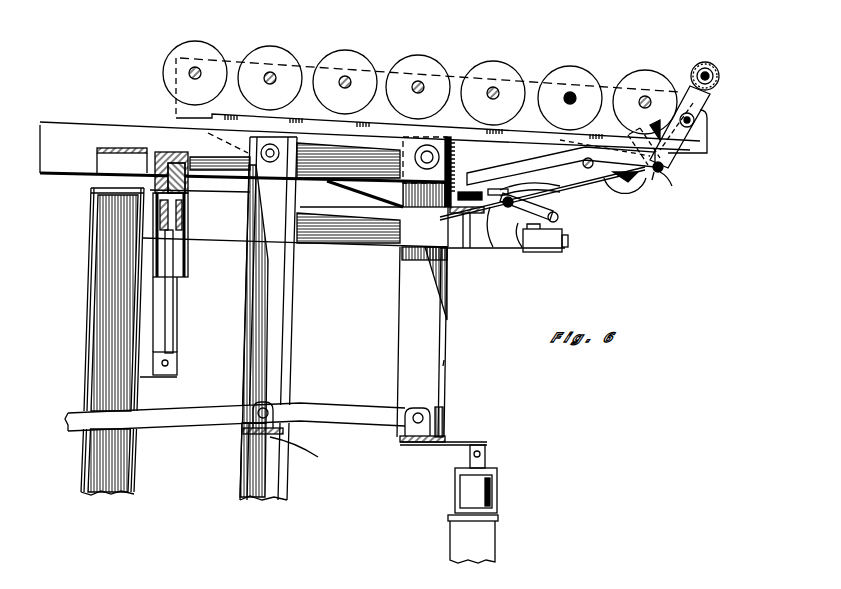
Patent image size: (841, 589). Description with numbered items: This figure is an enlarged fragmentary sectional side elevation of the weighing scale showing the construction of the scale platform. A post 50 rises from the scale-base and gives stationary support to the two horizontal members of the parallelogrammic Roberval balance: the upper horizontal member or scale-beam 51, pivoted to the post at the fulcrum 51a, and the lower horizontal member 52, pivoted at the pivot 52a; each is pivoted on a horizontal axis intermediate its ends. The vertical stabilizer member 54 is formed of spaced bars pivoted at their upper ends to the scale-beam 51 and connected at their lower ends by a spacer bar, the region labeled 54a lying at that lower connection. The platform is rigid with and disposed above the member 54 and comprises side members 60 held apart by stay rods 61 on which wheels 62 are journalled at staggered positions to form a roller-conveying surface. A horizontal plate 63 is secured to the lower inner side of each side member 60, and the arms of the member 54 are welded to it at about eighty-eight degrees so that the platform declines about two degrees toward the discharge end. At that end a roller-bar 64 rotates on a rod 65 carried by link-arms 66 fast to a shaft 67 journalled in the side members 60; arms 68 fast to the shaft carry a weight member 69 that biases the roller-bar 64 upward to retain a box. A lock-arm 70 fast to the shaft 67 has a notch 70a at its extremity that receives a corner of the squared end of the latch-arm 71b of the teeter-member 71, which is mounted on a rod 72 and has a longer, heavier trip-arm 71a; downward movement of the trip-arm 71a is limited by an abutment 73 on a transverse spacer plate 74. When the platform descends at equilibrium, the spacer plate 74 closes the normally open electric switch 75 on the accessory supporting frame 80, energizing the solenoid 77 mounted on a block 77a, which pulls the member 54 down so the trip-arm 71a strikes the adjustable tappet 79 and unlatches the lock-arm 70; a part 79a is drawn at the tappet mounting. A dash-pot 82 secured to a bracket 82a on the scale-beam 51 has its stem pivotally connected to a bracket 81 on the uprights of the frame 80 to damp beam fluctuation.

The post 50 is at (290, 320).
The horizontal member (scale-beam) 51 is at (111, 127).
The pivot (fulcrum) 51a is at (270, 162).
The lower horizontal member 52 is at (177, 426).
The pivot 52a is at (276, 405).
The vertical member (stabilizer member) 54 is at (447, 316).
The post pivot bracket 54a is at (440, 404).
The side member 60 is at (535, 80).
The stay rod 61 is at (270, 78).
The wheel 62 is at (333, 58).
The horizontal plate 63 is at (533, 140).
The roller-bar 64 is at (714, 68).
The rod 65 is at (715, 76).
The link-arm 66 is at (712, 100).
The shaft 67 is at (706, 120).
The arm 68 is at (646, 137).
The weight member 69 is at (652, 180).
The lock-arm 70 is at (664, 168).
The notch 70a is at (672, 186).
The teeter-member (automatic latching device) 71 is at (576, 158).
The trip-arm portion 71a is at (474, 175).
The latch-arm portion 71b is at (628, 192).
The rod 72 is at (592, 158).
The abutment 73 is at (548, 190).
The transverse spacer plate 74 is at (558, 208).
The electric switch 75 is at (527, 252).
The solenoid 77 is at (496, 480).
The block 77a is at (450, 548).
The adjustable tappet 79 is at (468, 215).
The bracket 79a is at (497, 249).
The accessory supporting frame 80 is at (92, 296).
The bracket 81 is at (178, 378).
The dash-pot 82 is at (186, 226).
The bracket 82a is at (151, 156).